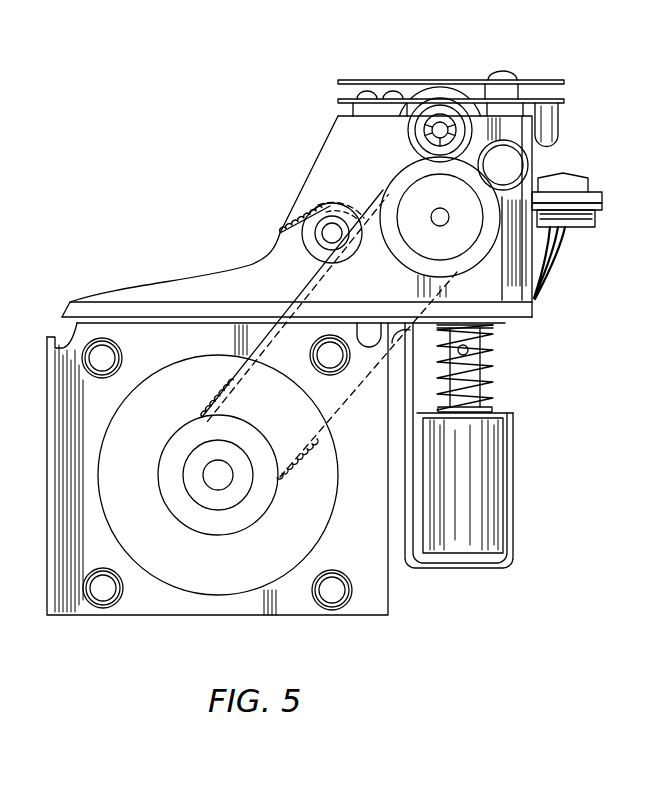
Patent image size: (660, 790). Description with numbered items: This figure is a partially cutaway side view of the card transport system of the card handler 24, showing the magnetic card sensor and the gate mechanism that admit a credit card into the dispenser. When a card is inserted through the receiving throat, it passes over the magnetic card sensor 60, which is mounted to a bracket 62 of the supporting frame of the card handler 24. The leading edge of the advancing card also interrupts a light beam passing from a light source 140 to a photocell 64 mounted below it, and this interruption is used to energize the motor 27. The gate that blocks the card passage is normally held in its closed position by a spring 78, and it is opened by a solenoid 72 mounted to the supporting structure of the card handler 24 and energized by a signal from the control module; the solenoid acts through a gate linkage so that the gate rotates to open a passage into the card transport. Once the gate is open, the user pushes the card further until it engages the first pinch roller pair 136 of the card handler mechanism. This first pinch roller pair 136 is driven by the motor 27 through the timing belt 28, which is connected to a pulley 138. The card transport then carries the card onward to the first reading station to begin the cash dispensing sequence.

The card handler 24 is at (472, 72).
The first pinch roller pair 136 is at (432, 90).
The pulley 138 is at (381, 200).
The light source 140 is at (559, 121).
The magnetic card sensor 60 is at (572, 177).
The photocell 64 is at (599, 198).
The bracket 62 is at (592, 224).
The spring 78 is at (494, 367).
The solenoid 72 is at (514, 493).
The timing belt 28 is at (222, 390).
The motor 27 is at (176, 618).